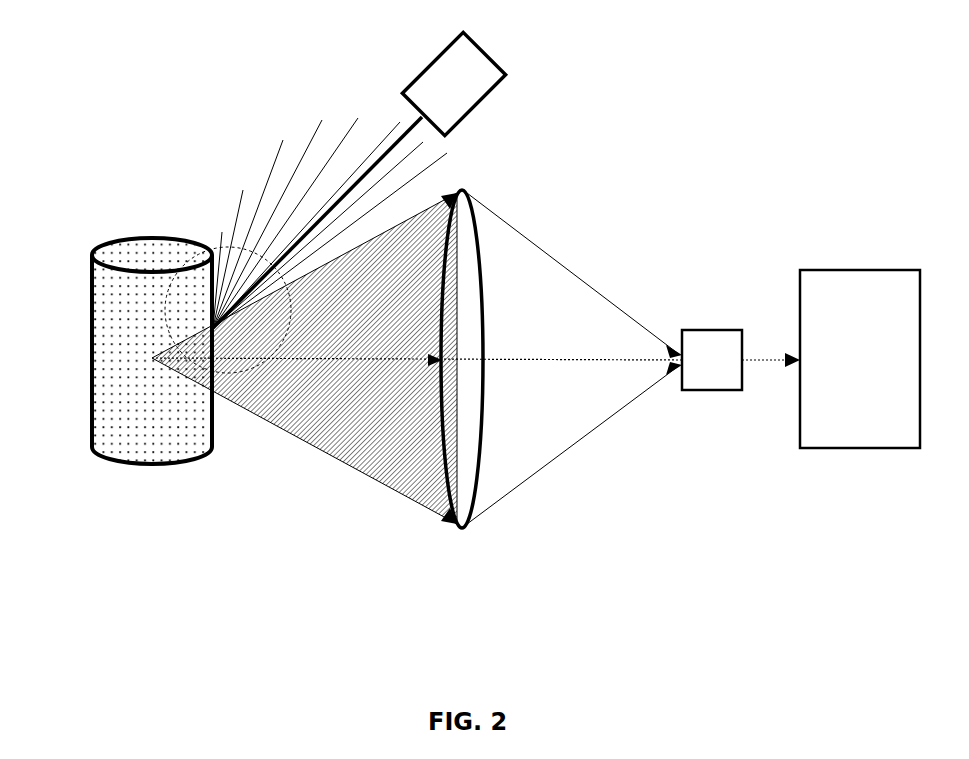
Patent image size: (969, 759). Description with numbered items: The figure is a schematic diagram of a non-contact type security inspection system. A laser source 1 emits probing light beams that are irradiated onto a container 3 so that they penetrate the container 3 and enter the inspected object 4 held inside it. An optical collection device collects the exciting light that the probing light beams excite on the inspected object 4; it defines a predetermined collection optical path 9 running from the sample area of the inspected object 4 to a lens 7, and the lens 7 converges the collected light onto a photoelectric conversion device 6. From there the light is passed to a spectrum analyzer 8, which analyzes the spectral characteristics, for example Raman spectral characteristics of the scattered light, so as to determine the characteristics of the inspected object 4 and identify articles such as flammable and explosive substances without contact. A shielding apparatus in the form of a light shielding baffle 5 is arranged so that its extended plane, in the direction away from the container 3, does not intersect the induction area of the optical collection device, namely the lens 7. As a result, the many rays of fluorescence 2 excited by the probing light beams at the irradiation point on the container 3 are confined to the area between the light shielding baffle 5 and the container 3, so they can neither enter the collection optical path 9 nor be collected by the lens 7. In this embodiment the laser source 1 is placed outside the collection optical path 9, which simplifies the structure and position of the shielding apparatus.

The laser source 1 is at (465, 107).
The fluorescence 2 is at (293, 180).
The container 3 is at (123, 462).
The inspected object 4 is at (110, 300).
The light shielding baffle 5 is at (218, 322).
The photoelectric conversion device 6 is at (712, 335).
The lens 7 is at (463, 482).
The spectrum analyzer 8 is at (842, 277).
The collection optical path 9 is at (373, 462).